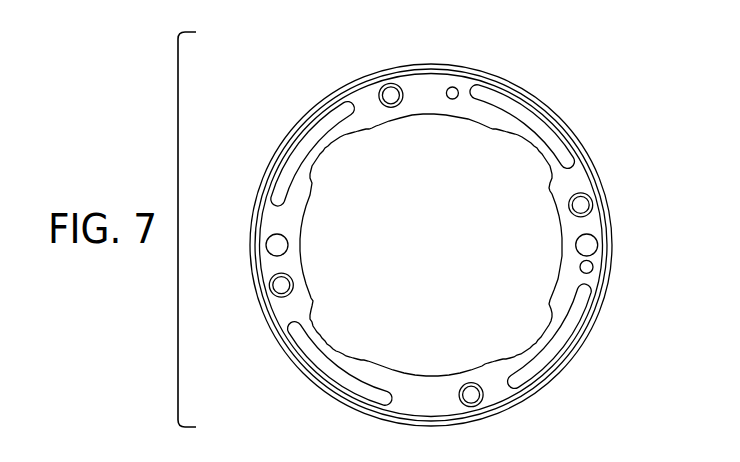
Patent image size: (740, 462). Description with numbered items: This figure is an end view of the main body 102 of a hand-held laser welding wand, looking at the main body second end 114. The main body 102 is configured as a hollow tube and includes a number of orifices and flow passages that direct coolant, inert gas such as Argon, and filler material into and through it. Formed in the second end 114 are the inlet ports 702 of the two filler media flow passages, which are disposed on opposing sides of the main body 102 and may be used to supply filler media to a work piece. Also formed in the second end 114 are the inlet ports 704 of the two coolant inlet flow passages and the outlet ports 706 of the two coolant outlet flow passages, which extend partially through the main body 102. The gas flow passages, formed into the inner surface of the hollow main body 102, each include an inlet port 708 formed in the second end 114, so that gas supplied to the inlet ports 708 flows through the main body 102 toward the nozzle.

The main body 102 is at (543, 80).
The second end 114 is at (463, 85).
The inlet port 702 is at (267, 245).
The inlet port 704 is at (493, 100).
The outlet port 706 is at (287, 183).
The inlet port 708 is at (333, 157).